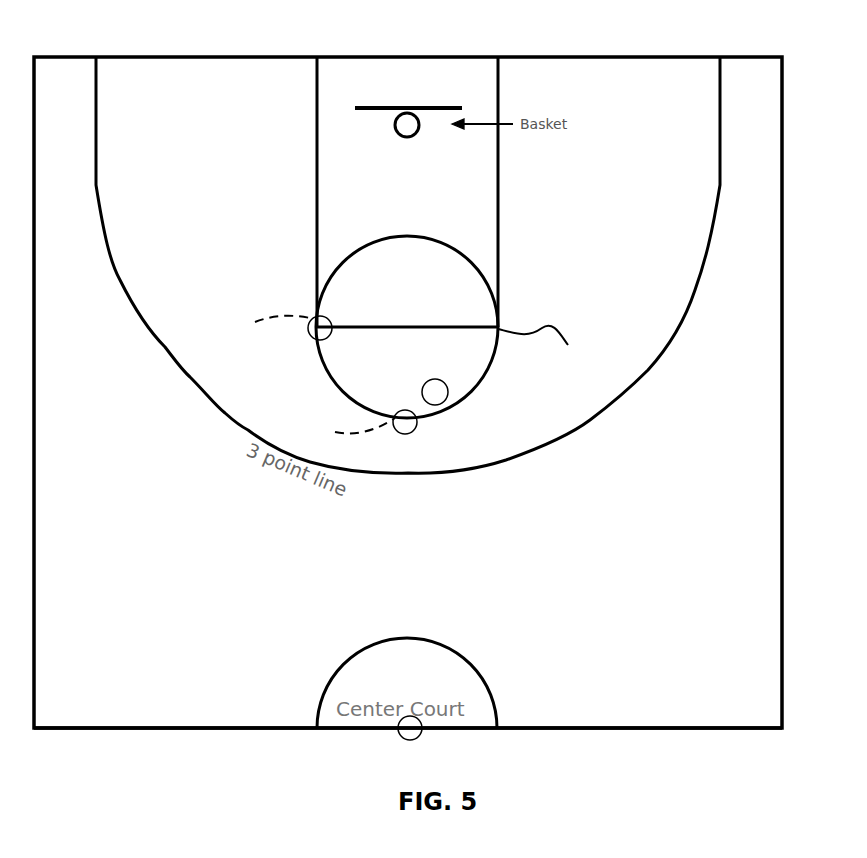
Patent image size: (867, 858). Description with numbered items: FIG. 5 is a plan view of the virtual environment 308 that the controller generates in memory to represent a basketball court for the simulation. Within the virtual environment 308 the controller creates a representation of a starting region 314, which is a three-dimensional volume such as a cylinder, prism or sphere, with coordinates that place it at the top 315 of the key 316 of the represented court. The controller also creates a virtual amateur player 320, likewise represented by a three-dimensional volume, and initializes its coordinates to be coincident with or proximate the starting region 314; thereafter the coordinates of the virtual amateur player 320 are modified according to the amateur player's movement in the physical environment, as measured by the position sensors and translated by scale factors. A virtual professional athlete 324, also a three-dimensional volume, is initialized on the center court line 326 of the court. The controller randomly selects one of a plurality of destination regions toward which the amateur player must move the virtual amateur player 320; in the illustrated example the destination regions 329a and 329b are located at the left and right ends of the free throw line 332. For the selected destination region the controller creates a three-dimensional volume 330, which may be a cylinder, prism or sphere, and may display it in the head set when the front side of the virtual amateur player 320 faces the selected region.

The virtual environment 308 is at (760, 58).
The key 316 is at (498, 212).
The free throw line 332 is at (385, 336).
The 3-dimensional volume 330 is at (313, 333).
The virtual amateur player 320 is at (450, 405).
The starting region 314 is at (415, 432).
The virtual professional athlete 324 is at (400, 735).
The destination region 329a is at (253, 321).
The destination region 329b is at (550, 348).
The top of the key 315 is at (345, 423).
The center court line 326 is at (205, 728).